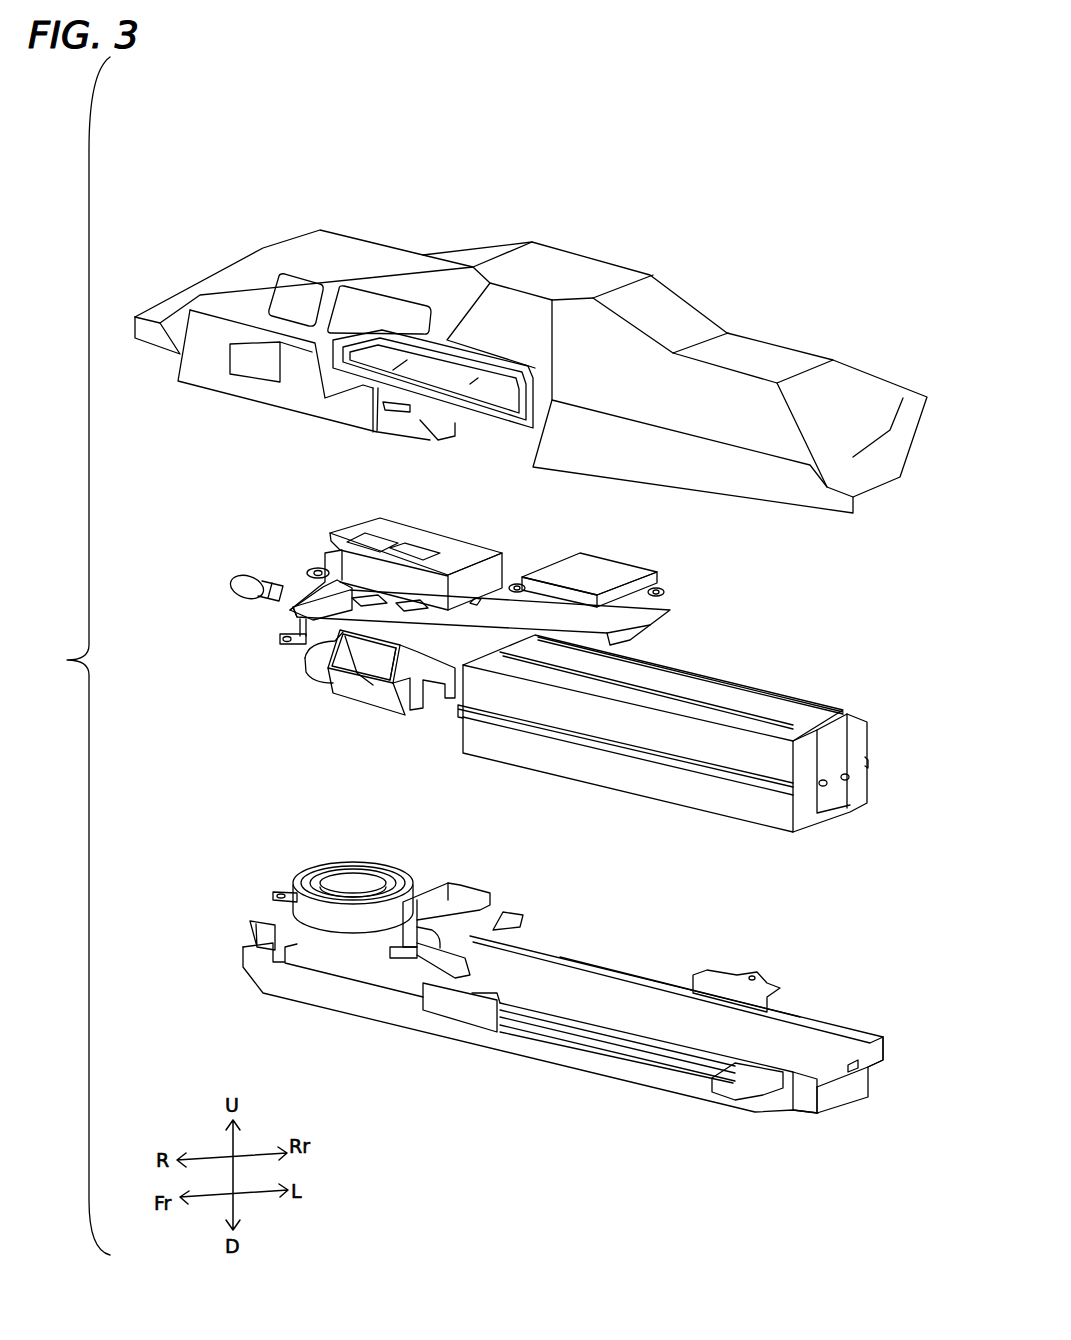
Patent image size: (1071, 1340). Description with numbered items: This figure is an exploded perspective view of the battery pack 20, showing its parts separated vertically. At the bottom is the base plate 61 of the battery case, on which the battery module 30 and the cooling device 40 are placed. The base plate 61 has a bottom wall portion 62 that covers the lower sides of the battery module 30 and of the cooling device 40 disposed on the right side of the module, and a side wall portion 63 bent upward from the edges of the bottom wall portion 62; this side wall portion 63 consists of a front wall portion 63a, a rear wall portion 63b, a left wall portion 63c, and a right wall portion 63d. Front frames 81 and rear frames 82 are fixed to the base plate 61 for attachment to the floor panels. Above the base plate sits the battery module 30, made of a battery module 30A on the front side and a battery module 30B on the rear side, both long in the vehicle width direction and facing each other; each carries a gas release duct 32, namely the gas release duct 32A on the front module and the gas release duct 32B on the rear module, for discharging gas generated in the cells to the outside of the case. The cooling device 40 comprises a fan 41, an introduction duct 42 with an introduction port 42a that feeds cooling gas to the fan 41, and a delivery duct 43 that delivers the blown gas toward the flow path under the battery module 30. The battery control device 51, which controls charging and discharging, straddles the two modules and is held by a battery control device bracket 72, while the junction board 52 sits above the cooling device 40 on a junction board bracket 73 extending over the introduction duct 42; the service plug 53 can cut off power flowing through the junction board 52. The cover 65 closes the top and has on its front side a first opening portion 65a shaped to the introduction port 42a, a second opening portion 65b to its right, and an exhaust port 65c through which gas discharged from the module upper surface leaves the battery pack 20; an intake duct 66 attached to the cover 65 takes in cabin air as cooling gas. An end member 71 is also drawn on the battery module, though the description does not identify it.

The battery pack 20 is at (185, 126).
The battery module 30 is at (706, 719).
The battery module 30A is at (722, 712).
The battery module 30B is at (800, 710).
The gas release duct 32 is at (706, 750).
The gas release duct 32A is at (700, 770).
The gas release duct 32B is at (870, 755).
The cooling device 40 is at (361, 804).
The fan 41 is at (330, 873).
The introduction duct 42 is at (365, 704).
The introduction port 42a is at (373, 683).
The delivery duct 43 is at (440, 885).
The battery control device 51 is at (602, 570).
The junction board 52 is at (455, 557).
The service plug 53 is at (232, 579).
The base plate 61 is at (852, 1098).
The bottom wall portion 62 is at (622, 1043).
The side wall portion 63 is at (583, 1034).
The front wall portion 63a is at (805, 1100).
The rear wall portion 63b is at (805, 1045).
The left wall portion 63c is at (827, 1100).
The right wall portion 63d is at (258, 925).
The cover 65 is at (531, 355).
The first opening portion 65a is at (370, 315).
The second opening portion 65b is at (300, 300).
The exhaust port 65c is at (440, 420).
The intake duct 66 is at (327, 382).
The end cap 71 is at (845, 705).
The battery control device bracket 72 is at (618, 628).
The junction board bracket 73 is at (340, 600).
The front frame 81 is at (442, 1015).
The rear frame 82 is at (513, 920).